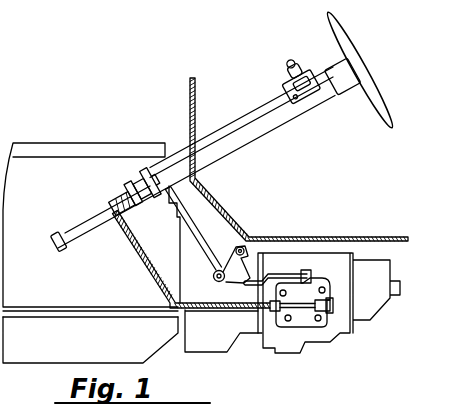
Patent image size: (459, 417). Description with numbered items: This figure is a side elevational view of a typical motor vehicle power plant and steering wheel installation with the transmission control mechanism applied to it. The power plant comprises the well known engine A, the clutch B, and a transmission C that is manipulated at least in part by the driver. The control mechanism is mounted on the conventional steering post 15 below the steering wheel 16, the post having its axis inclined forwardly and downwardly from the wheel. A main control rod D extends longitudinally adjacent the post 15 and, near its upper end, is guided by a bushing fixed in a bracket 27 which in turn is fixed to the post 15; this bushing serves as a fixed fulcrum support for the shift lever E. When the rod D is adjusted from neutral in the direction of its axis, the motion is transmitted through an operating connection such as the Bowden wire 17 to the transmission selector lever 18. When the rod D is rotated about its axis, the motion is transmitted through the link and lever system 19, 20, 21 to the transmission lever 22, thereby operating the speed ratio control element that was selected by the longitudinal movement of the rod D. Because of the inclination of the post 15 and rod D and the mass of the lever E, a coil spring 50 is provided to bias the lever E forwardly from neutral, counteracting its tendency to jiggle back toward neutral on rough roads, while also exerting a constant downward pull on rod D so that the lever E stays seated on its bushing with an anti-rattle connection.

The engine A is at (57, 165).
The clutch B is at (200, 340).
The transmission C is at (336, 260).
The main control rod D is at (246, 113).
The lever E is at (310, 56).
The steering post 15 is at (258, 133).
The steering wheel 16 is at (388, 105).
The Bowden wire 17 is at (306, 313).
The transmission selector lever 18 is at (326, 287).
The link 19 is at (202, 232).
The lever 20 is at (255, 239).
The lever 21 is at (277, 275).
The transmission lever 22 is at (308, 273).
The bracket 27 is at (296, 77).
The coil spring 50 is at (180, 157).